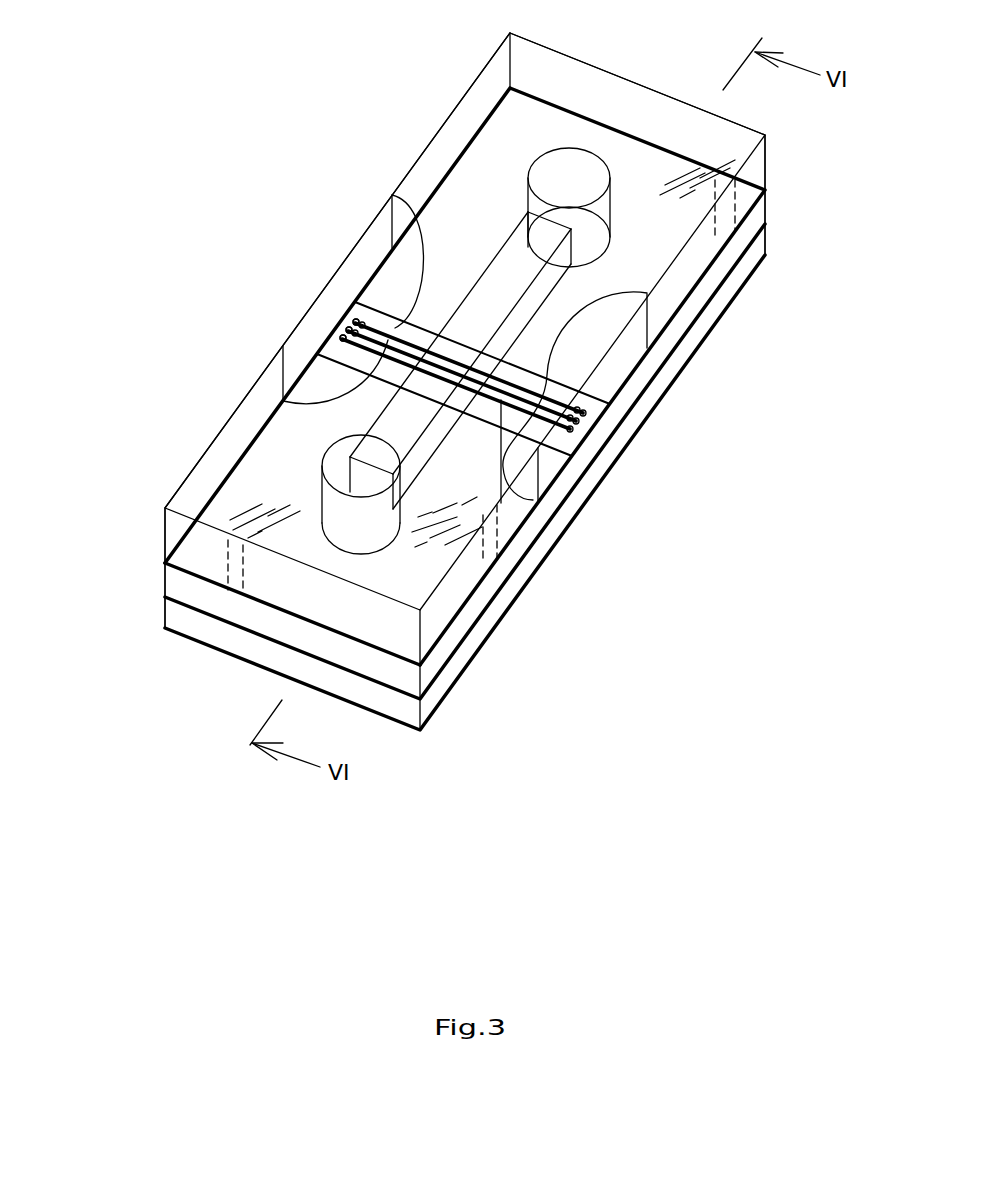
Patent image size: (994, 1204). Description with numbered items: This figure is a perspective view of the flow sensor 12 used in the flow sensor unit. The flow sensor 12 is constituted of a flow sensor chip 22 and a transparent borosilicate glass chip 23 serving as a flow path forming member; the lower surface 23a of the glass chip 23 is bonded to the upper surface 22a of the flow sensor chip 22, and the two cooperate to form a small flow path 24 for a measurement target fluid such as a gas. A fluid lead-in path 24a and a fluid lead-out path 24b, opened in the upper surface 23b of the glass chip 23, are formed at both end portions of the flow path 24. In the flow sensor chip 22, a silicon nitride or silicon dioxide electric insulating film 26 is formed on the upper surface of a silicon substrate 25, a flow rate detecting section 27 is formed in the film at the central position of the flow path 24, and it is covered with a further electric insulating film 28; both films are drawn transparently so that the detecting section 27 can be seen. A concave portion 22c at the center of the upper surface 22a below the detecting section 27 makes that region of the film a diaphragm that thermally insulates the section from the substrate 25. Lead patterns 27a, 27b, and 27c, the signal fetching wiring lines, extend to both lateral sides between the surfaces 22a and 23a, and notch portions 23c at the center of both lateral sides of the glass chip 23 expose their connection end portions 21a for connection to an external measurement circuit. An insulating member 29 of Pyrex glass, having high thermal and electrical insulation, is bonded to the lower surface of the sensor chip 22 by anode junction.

The flow sensor 12 is at (260, 84).
The electrode pads 21a is at (600, 427).
The flow sensor chip 22 is at (158, 582).
The upper surface of the flow sensor chip 22a is at (195, 528).
The concave portion 22c is at (472, 355).
The glass chip 23 is at (158, 534).
The lower surface of the glass chip 23a is at (220, 602).
The upper surface of the glass chip 23b is at (242, 477).
The notch portions 23c is at (410, 238).
The flow path 24 is at (410, 426).
The fluid lead-in path 24a is at (327, 475).
The fluid lead-out path 24b is at (570, 162).
The silicon substrate 25 is at (193, 632).
The electric insulating film 26 is at (360, 318).
The flow rate detecting section 27 is at (462, 306).
The lead pattern 27a is at (350, 322).
The lead pattern 27b is at (340, 337).
The lead pattern 27c is at (370, 307).
The electric insulating film 28 is at (349, 330).
The insulating member 29 is at (528, 560).